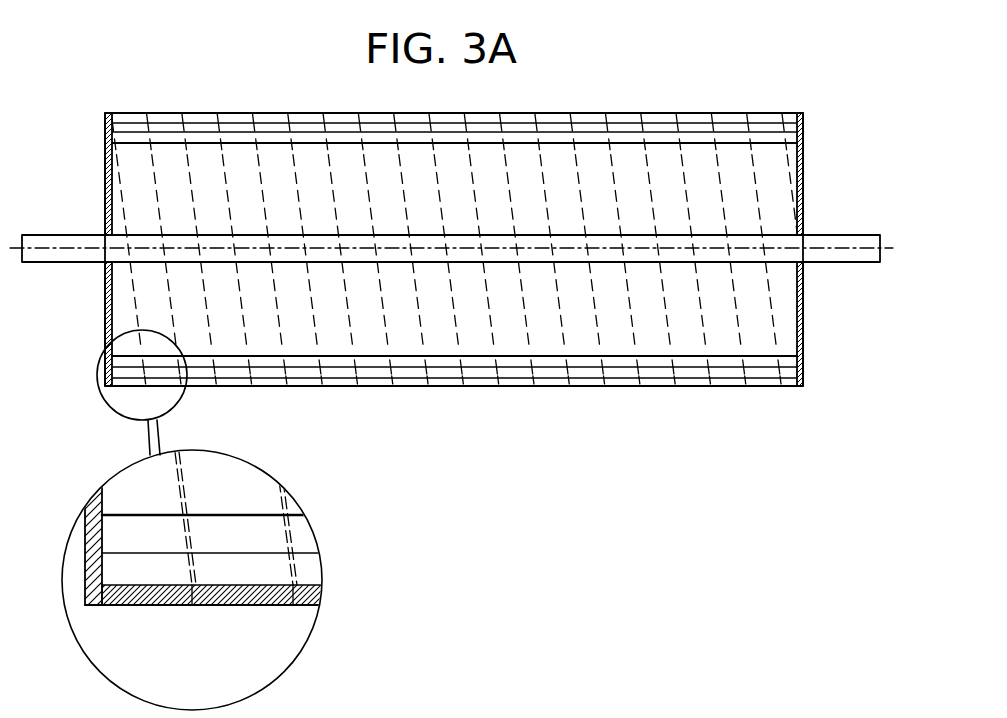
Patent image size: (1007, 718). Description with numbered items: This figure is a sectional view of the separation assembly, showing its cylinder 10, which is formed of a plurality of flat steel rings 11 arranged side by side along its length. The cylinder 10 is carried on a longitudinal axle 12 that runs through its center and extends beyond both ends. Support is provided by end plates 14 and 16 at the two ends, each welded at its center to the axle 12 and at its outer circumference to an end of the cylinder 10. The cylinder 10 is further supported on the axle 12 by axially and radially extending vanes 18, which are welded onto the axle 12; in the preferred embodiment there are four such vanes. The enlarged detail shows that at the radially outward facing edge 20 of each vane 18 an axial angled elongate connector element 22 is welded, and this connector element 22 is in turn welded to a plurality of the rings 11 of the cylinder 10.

The cylinder 10 is at (620, 388).
The flat steel rings 11 is at (368, 367).
The longitudinal axle 12 is at (820, 263).
The end plate 14 is at (102, 302).
The end plate 16 is at (803, 337).
The vanes 18 is at (214, 478).
The radially outward facing edge 20 is at (258, 518).
The axial angled elongate connector element 22 is at (305, 542).